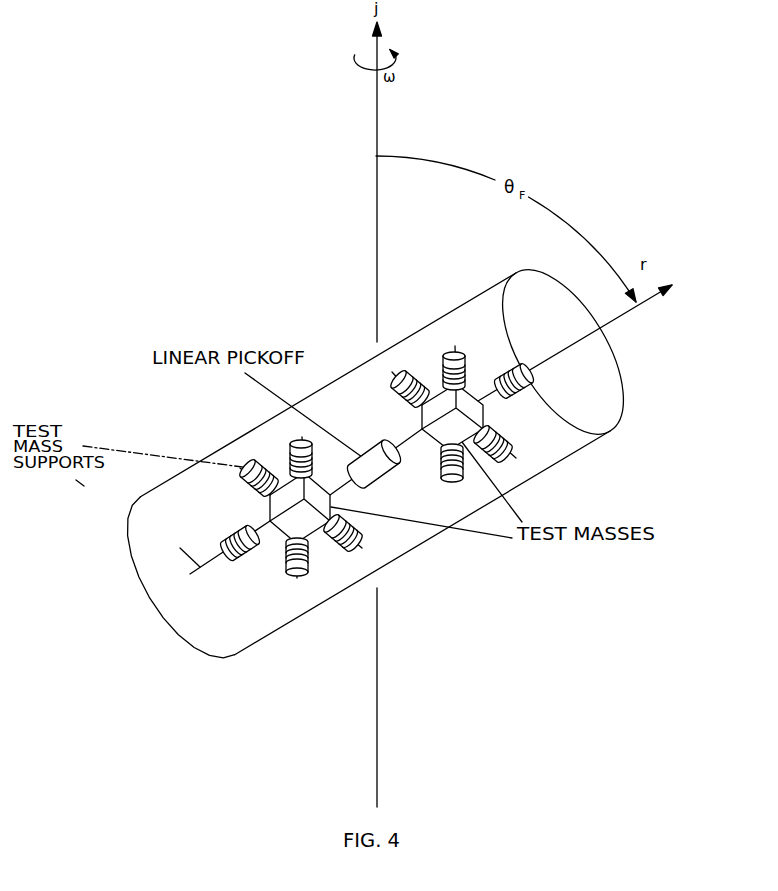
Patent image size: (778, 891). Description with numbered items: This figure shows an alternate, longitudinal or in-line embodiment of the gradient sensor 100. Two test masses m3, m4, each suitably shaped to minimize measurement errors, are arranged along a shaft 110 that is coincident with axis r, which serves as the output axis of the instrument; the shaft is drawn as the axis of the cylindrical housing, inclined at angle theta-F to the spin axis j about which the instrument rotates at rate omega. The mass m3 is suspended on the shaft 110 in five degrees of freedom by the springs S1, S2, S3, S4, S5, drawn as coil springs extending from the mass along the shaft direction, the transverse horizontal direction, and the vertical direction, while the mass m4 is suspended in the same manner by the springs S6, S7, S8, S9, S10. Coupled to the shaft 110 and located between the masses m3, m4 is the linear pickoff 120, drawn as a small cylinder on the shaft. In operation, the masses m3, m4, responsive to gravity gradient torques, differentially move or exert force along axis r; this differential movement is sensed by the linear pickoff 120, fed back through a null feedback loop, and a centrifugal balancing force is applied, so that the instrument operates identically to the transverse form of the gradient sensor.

The gradient sensor 100 is at (460, 305).
The shaft 110 is at (640, 311).
The linear pickoff 120 is at (374, 464).
The spring S1 is at (230, 545).
The spring S2 is at (258, 471).
The spring S3 is at (308, 453).
The spring S4 is at (350, 532).
The spring S5 is at (310, 562).
The spring S6 is at (517, 369).
The spring S7 is at (500, 443).
The spring S8 is at (460, 472).
The spring S9 is at (409, 378).
The spring S10 is at (468, 365).
The mass m3 is at (300, 508).
The mass m4 is at (452, 417).